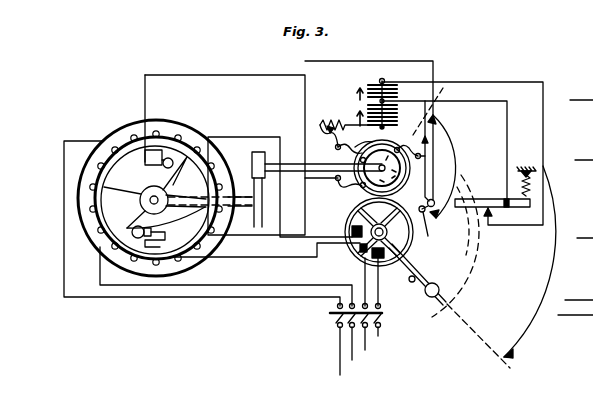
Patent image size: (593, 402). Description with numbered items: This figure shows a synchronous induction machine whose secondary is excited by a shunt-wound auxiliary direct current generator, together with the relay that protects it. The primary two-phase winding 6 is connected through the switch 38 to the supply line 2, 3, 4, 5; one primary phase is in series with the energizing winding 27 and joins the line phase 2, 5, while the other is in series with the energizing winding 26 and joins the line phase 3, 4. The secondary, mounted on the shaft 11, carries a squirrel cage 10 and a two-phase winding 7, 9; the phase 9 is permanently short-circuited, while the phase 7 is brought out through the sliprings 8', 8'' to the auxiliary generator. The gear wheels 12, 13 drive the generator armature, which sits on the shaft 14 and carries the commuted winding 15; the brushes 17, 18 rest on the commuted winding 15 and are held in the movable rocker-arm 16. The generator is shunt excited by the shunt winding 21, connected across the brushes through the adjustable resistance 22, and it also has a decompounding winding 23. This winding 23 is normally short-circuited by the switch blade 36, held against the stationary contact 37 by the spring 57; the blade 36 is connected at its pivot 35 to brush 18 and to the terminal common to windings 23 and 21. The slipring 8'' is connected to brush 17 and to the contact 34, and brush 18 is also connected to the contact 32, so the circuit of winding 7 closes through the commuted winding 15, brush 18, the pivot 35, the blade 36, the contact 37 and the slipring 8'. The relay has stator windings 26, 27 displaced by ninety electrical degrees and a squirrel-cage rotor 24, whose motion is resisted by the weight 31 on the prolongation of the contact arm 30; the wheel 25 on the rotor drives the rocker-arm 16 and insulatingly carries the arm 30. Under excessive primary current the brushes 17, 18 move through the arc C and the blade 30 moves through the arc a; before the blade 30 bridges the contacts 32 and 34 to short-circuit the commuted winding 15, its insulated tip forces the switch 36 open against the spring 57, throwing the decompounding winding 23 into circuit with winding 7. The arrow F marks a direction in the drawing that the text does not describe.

The supply line phase conductor 2 is at (338, 358).
The supply line phase conductor 3 is at (353, 351).
The supply line phase conductor 4 is at (366, 346).
The supply line phase conductor 5 is at (379, 339).
The primary two-phase winding 6 is at (123, 126).
The secondary phase winding 7 is at (110, 162).
The slipring 8' is at (159, 159).
The slipring 8'' is at (148, 239).
The secondary phase winding 9 is at (103, 231).
The squirrel cage winding 10 is at (192, 253).
The shaft 11 is at (243, 207).
The gear wheel 12 is at (260, 215).
The gear wheel 13 is at (258, 152).
The shaft 14 is at (291, 163).
The commuted winding 15 is at (354, 139).
The movable rocker-arm 16 is at (400, 174).
The brush 17 is at (349, 187).
The brush 18 is at (397, 149).
The shunt winding 21 is at (398, 118).
The adjustable resistance 22 is at (348, 124).
The decompounding winding 23 is at (397, 92).
The rotor 24 is at (392, 224).
The wheel 25 is at (360, 255).
The energizing winding 26 is at (352, 226).
The energizing winding 27 is at (384, 262).
The contact arm 30 is at (418, 266).
The weight 31 is at (430, 300).
The stationary contact 32 is at (432, 227).
The stationary contact 34 is at (436, 200).
The pivot 35 is at (502, 199).
The switch blade 36 is at (455, 246).
The stationary contact 37 is at (490, 216).
The switch 38 is at (331, 314).
The spring 57 is at (534, 171).
The pointer direction F is at (189, 179).
The arc of brush movement C is at (443, 166).
The arc of blade movement a is at (530, 262).